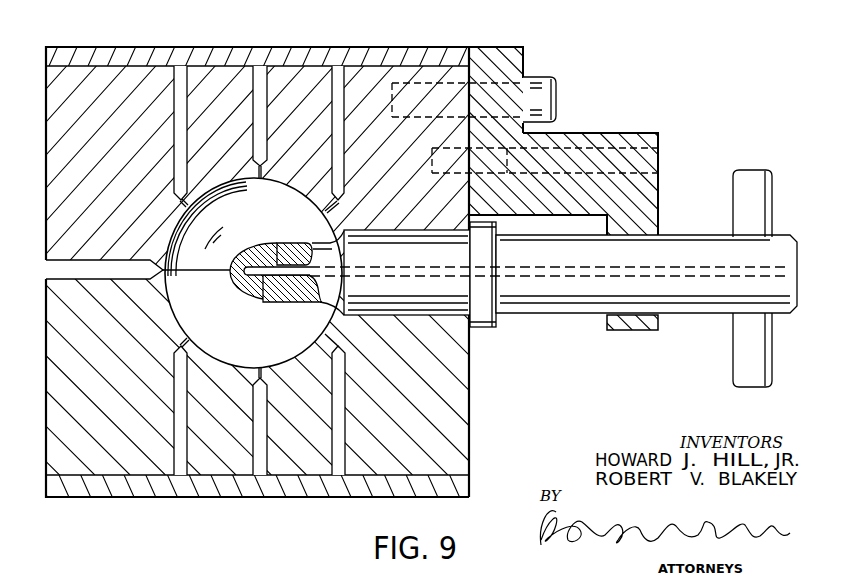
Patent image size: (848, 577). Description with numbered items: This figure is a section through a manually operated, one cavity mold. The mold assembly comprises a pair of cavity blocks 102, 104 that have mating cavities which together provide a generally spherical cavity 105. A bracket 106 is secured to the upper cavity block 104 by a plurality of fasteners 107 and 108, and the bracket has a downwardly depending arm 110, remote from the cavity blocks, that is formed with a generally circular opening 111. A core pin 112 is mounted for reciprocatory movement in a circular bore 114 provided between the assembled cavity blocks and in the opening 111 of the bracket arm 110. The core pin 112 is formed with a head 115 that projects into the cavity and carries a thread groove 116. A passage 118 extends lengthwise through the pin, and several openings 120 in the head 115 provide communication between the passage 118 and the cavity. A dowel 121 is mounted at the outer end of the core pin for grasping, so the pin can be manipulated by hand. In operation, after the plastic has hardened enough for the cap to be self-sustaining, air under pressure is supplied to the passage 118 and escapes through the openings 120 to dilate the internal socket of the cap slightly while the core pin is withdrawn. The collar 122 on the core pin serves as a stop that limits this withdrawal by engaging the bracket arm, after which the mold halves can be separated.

The cavity block 102 is at (285, 466).
The upper cavity block 104 is at (318, 67).
The spherical cavity 105 is at (261, 217).
The bracket 106 is at (523, 52).
The fastener 107 is at (557, 84).
The fastener 108 is at (513, 160).
The arm 110 is at (654, 193).
The opening 111 is at (673, 237).
The core pin 112 is at (568, 314).
The circular bore 114 is at (428, 318).
The head 115 is at (299, 242).
The thread groove 116 is at (272, 302).
The passage 118 is at (775, 266).
The openings 120 is at (250, 297).
The dowel 121 is at (772, 198).
The collar 122 is at (498, 257).